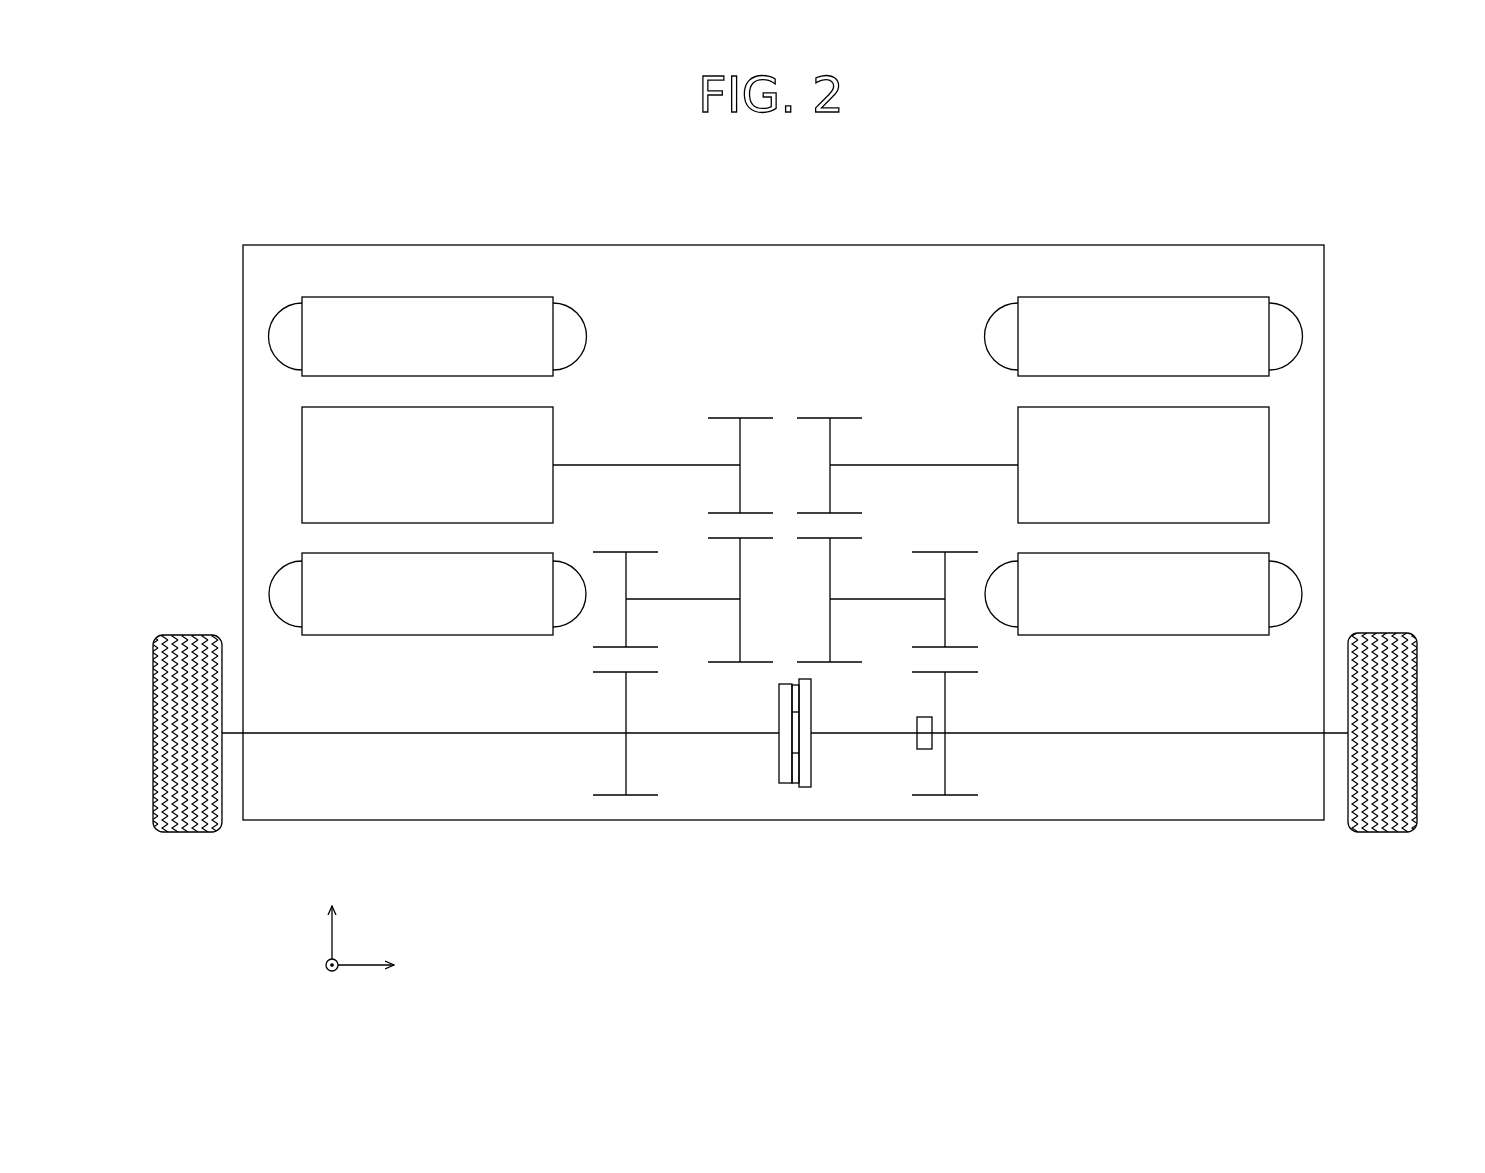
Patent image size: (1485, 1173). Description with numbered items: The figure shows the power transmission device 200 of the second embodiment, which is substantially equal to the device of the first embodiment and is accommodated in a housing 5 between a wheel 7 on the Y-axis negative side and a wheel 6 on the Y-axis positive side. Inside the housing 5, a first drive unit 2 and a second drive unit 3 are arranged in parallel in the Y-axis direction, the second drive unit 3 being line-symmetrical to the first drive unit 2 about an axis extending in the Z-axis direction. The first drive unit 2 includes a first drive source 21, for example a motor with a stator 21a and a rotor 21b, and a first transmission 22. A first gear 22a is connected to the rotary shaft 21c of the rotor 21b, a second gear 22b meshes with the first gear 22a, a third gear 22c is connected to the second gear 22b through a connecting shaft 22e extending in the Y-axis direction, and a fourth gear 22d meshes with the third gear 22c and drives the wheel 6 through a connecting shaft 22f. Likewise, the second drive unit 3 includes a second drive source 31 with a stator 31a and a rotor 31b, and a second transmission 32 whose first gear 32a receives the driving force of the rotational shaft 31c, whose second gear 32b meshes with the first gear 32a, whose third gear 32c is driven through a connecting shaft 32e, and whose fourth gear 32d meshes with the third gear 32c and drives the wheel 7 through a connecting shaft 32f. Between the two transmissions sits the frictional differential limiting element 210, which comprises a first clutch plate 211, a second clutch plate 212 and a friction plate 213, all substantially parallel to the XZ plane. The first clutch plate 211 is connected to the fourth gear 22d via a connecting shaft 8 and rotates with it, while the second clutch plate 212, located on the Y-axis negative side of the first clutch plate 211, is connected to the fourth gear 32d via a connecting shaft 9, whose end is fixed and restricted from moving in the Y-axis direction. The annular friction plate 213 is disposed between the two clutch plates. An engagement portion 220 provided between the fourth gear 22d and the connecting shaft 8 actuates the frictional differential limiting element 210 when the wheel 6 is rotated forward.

The power transmission device 200 is at (1258, 127).
The housing 5 is at (815, 245).
The second drive unit 3 is at (424, 288).
The second drive source 31 is at (273, 391).
The stator 31a is at (312, 308).
The rotor 31b is at (305, 466).
The rotational shaft 31c is at (592, 465).
The first drive unit 2 is at (1144, 288).
The first drive source 21 is at (1290, 391).
The stator 21a is at (1283, 312).
The rotor 21b is at (1255, 466).
The rotary shaft 21c is at (988, 465).
The second transmission 32 is at (680, 394).
The first gear 32a is at (740, 442).
The second gear 32b is at (740, 575).
The third gear 32c is at (626, 628).
The fourth gear 32d is at (626, 701).
The connecting shaft 32e is at (688, 602).
The connecting shaft 32f is at (362, 733).
The first transmission 22 is at (862, 394).
The first gear 22a is at (830, 442).
The second gear 22b is at (830, 575).
The third gear 22c is at (945, 628).
The fourth gear 22d is at (945, 701).
The connecting shaft 22e is at (886, 602).
The connecting shaft 22f is at (1245, 733).
The connecting shaft 9 is at (703, 733).
The connecting shaft 8 is at (855, 733).
The frictional differential limiting element 210 is at (772, 792).
The first clutch plate 211 is at (808, 772).
The second clutch plate 212 is at (780, 764).
The friction plate 213 is at (795, 778).
The engagement portion 220 is at (922, 742).
The wheel 7 is at (153, 702).
The wheel 6 is at (1417, 702).